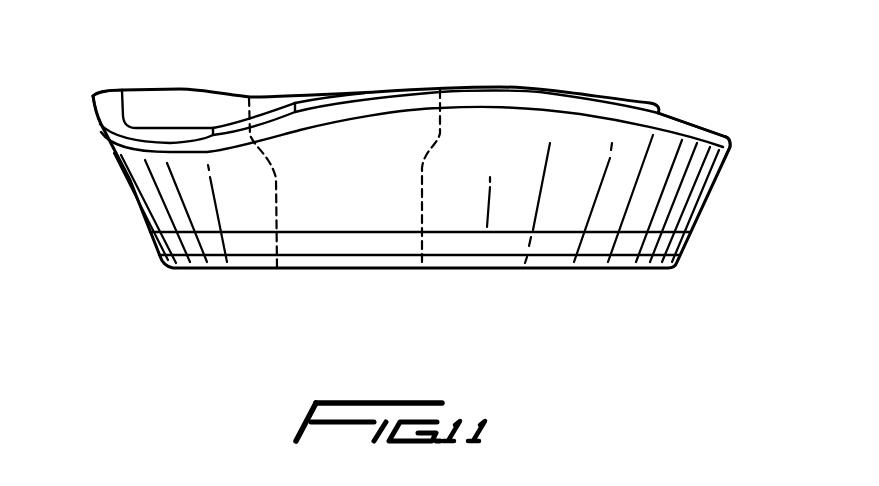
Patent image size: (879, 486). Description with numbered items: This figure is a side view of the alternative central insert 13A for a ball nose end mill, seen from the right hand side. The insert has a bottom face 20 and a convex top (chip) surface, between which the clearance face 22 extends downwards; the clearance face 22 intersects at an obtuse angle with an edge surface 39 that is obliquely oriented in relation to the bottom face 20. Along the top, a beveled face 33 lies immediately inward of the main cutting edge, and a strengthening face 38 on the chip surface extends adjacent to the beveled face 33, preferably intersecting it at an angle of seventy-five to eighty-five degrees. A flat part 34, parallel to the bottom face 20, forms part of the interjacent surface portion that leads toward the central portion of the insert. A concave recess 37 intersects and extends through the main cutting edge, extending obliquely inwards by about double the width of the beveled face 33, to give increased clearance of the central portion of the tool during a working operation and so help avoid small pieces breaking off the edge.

The central insert 13A is at (508, 83).
The bottom face 20 is at (574, 262).
The clearance face 22 is at (131, 190).
The beveled face 33 is at (108, 100).
The flat part 34 is at (158, 90).
The recess 37 is at (265, 117).
The strengthening face 38 is at (732, 147).
The edge surface 39 is at (158, 240).